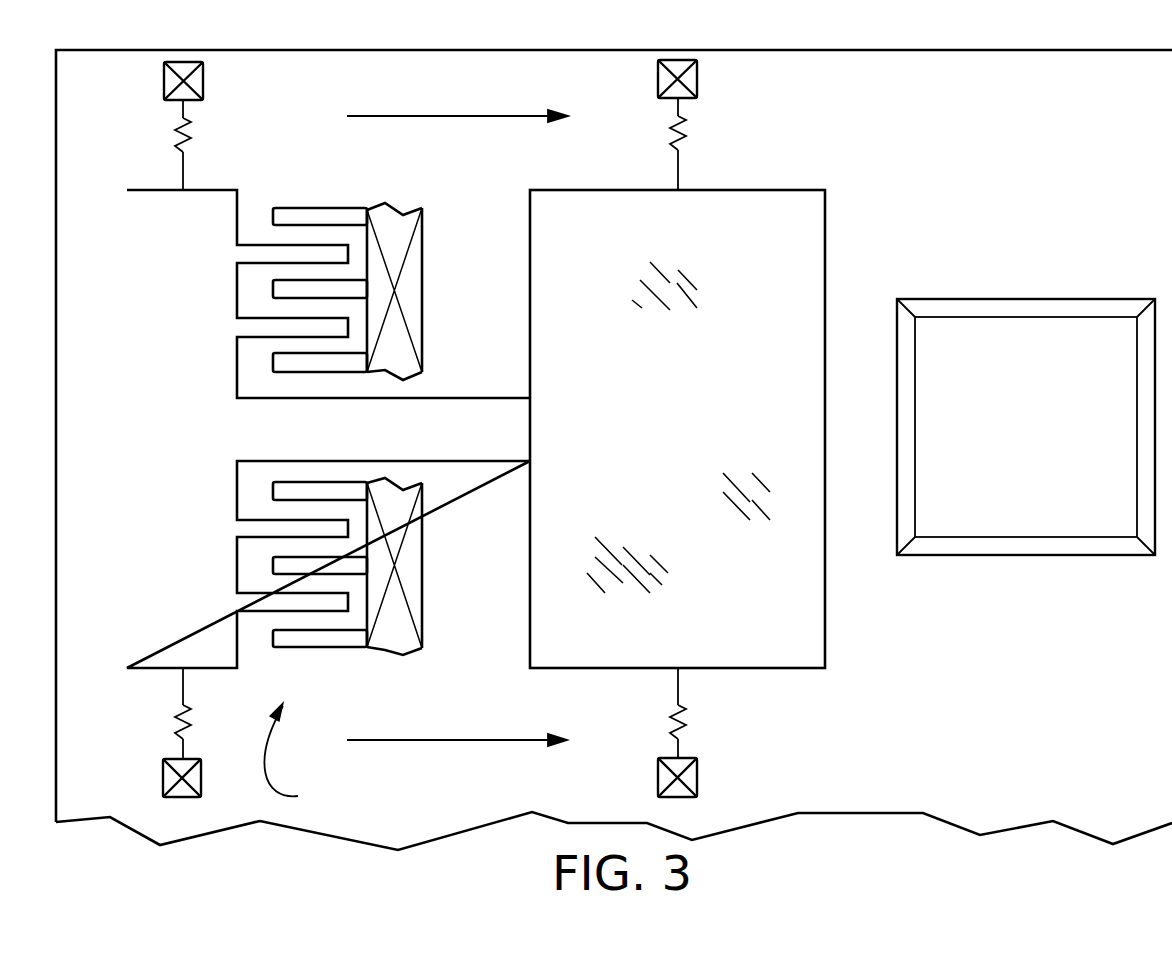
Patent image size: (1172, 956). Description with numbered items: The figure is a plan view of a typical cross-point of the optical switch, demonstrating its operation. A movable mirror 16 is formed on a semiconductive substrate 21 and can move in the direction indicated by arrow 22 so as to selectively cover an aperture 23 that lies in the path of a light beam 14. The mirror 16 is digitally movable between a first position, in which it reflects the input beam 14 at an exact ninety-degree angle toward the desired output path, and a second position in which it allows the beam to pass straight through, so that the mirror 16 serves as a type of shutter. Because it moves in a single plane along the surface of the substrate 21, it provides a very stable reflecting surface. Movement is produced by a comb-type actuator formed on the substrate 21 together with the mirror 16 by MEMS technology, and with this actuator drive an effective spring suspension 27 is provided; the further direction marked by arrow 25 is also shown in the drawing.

The beam 14 is at (1052, 408).
The mirror 16 is at (773, 639).
The substrate 21 is at (1050, 663).
The arrow 22 is at (448, 116).
The aperture 23 is at (973, 299).
The direction of rotation 25 is at (298, 755).
The spring suspension 27 is at (178, 126).